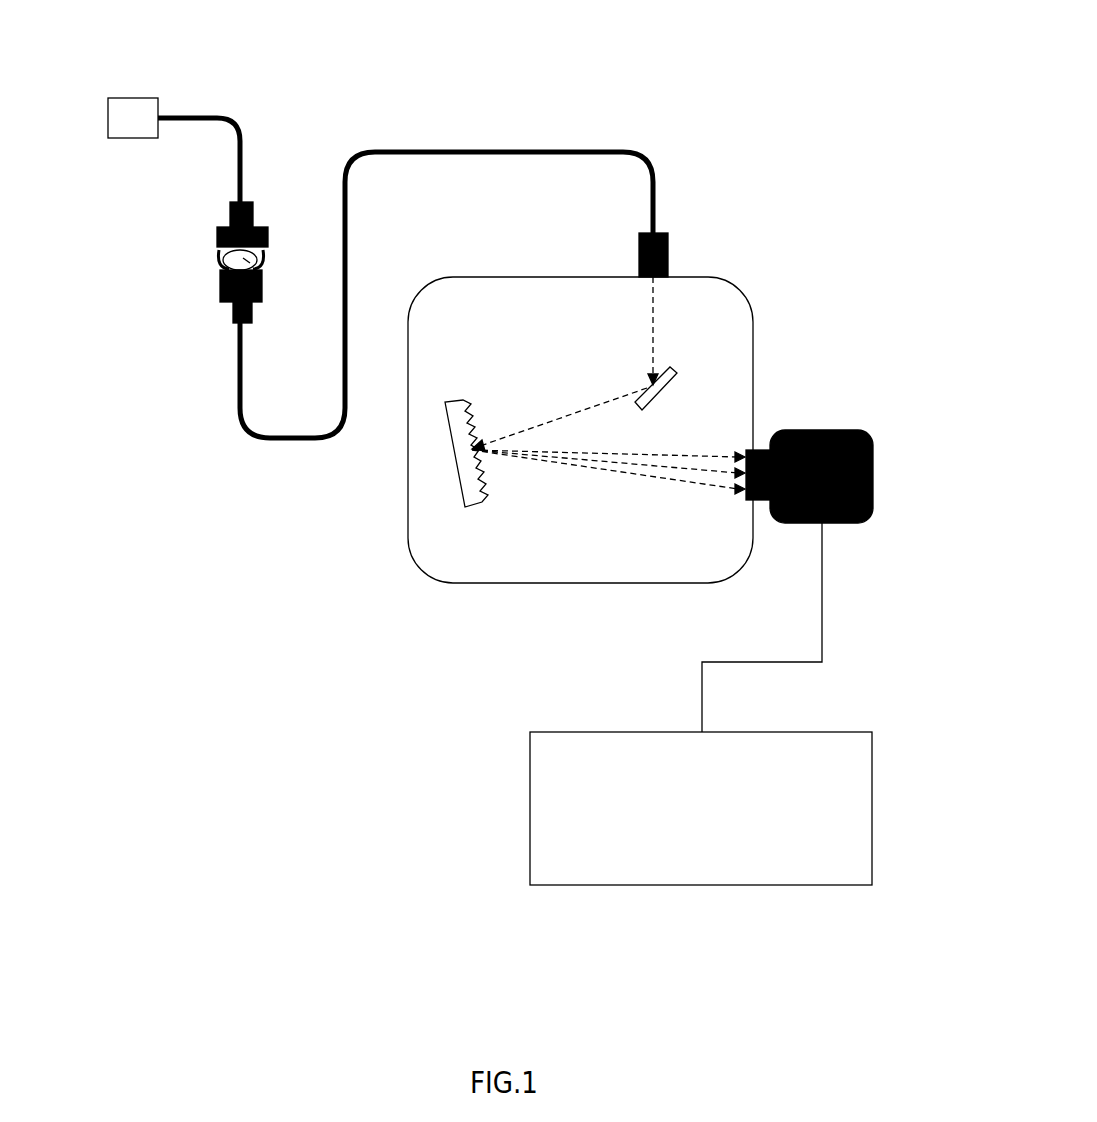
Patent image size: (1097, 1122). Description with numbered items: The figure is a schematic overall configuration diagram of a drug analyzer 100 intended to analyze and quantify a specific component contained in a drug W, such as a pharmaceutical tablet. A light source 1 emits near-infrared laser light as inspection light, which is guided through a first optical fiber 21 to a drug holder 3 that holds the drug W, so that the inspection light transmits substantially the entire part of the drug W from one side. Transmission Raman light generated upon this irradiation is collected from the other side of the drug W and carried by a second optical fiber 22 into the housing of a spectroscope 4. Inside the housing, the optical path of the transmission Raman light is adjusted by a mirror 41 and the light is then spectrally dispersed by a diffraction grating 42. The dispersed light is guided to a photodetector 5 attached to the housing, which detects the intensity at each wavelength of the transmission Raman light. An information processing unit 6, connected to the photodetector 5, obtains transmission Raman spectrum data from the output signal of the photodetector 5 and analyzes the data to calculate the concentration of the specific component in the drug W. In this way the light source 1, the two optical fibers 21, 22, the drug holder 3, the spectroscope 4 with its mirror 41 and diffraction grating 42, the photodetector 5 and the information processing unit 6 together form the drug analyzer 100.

The drug analyzer 100 is at (653, 102).
The light source 1 is at (133, 138).
The first optical fiber 21 is at (240, 133).
The second optical fiber 22 is at (450, 152).
The drug holder 3 is at (187, 288).
The drug W is at (257, 265).
The spectroscope 4 is at (580, 463).
The mirror 41 is at (660, 392).
The diffraction grating 42 is at (460, 398).
The photodetector 5 is at (823, 430).
The information processing unit 6 is at (648, 885).